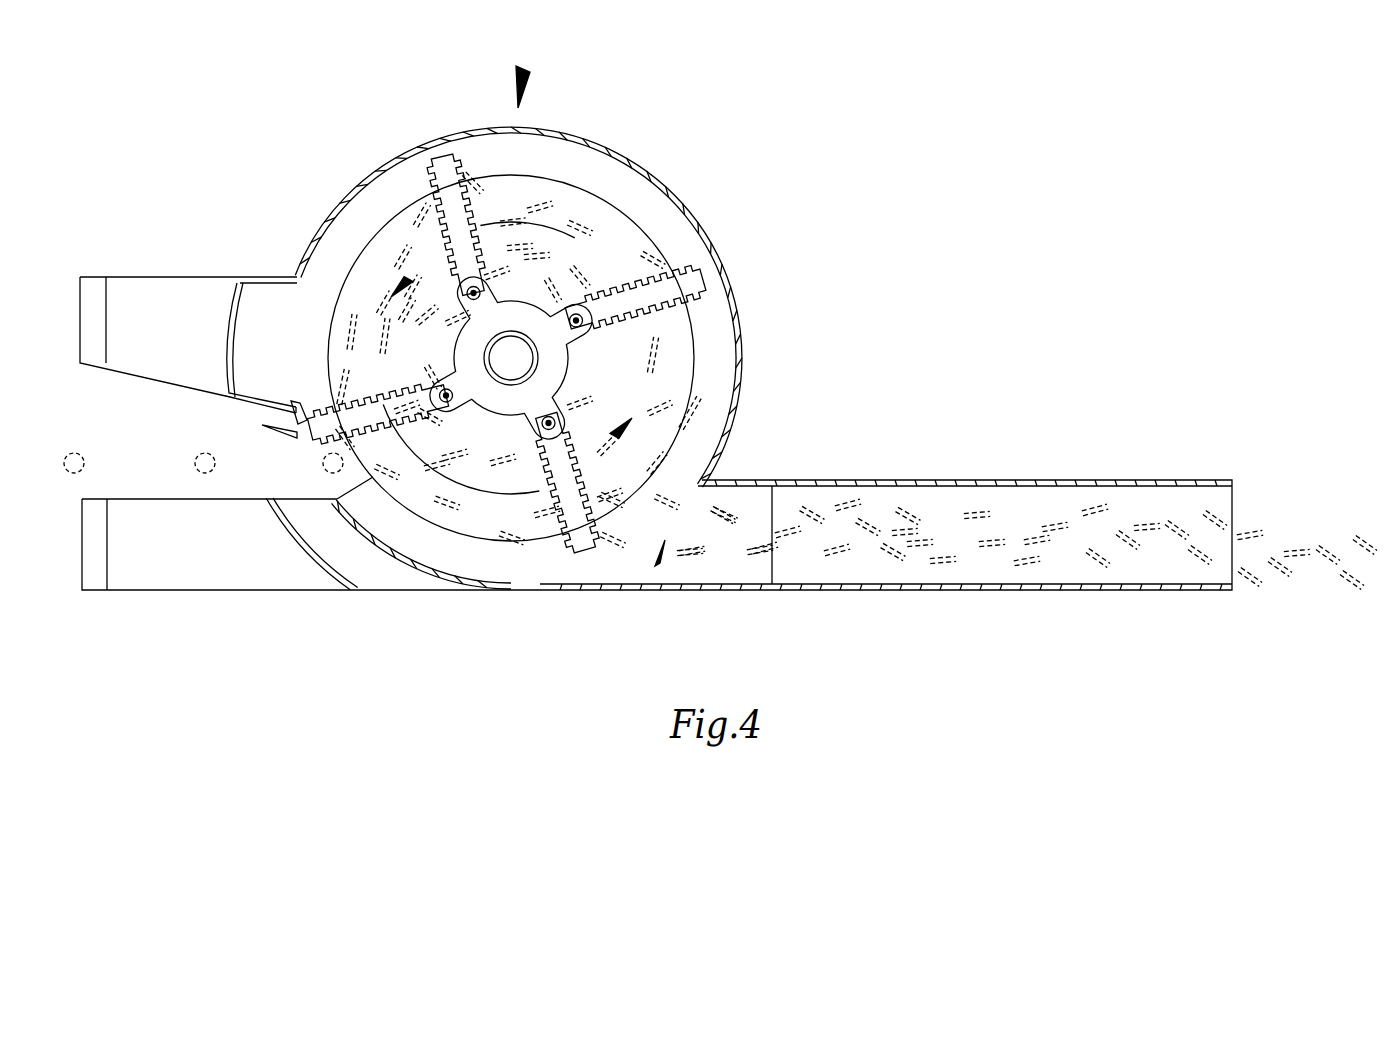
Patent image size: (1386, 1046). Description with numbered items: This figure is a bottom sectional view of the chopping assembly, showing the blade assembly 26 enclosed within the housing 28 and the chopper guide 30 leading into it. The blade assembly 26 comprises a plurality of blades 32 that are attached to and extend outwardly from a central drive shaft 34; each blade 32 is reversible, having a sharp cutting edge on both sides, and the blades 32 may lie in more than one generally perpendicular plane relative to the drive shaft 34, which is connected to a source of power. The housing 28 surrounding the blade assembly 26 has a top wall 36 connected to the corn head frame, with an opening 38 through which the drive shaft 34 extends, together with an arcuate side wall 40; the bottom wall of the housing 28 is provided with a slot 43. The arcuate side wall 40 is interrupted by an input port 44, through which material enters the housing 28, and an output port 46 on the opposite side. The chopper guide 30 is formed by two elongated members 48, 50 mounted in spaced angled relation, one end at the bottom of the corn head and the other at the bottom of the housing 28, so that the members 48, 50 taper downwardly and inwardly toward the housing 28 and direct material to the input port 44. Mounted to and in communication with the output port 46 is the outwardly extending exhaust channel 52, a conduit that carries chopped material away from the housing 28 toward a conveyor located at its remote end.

The blade assembly 26 is at (528, 283).
The housing 28 is at (518, 68).
The chopper guide 30 is at (80, 308).
The blades 32 is at (437, 163).
The drive shaft 34 is at (595, 336).
The top wall 36 is at (380, 203).
The opening 38 is at (622, 250).
The arcuate side wall 40 is at (551, 130).
The slot 43 is at (337, 477).
The input port 44 is at (262, 428).
The output port 46 is at (657, 565).
The elongated member 48 is at (143, 292).
The elongated member 50 is at (185, 570).
The exhaust channel 52 is at (1013, 480).